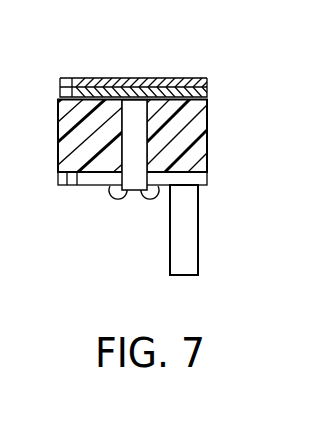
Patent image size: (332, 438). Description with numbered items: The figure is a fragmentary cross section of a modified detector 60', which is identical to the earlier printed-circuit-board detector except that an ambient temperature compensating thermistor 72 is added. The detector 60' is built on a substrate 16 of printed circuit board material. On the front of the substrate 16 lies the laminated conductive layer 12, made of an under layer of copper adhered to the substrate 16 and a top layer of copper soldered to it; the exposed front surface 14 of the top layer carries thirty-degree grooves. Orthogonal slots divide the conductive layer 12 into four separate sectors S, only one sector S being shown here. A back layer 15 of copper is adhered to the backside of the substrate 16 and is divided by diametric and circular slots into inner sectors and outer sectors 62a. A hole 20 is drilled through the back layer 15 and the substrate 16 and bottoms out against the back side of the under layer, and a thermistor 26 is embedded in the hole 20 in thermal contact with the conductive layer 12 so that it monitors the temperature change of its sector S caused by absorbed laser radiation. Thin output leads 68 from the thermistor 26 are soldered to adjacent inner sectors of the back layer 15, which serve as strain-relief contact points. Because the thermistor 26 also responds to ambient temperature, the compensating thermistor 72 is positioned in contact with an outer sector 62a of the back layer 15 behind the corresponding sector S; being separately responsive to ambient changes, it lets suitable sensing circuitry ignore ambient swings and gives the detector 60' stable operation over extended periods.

The detector 60' is at (148, 137).
The laminated conductive layer 12 is at (209, 79).
The front surface 14 is at (94, 78).
The sector S is at (190, 78).
The substrate 16 is at (67, 153).
The hole 20 is at (145, 137).
The thermistor 26 is at (141, 153).
The back layer 15 is at (81, 186).
The bottom strip 62a is at (88, 187).
The thin output leads 68 is at (138, 194).
The ambient temperature compensating thermistor 72 is at (191, 228).